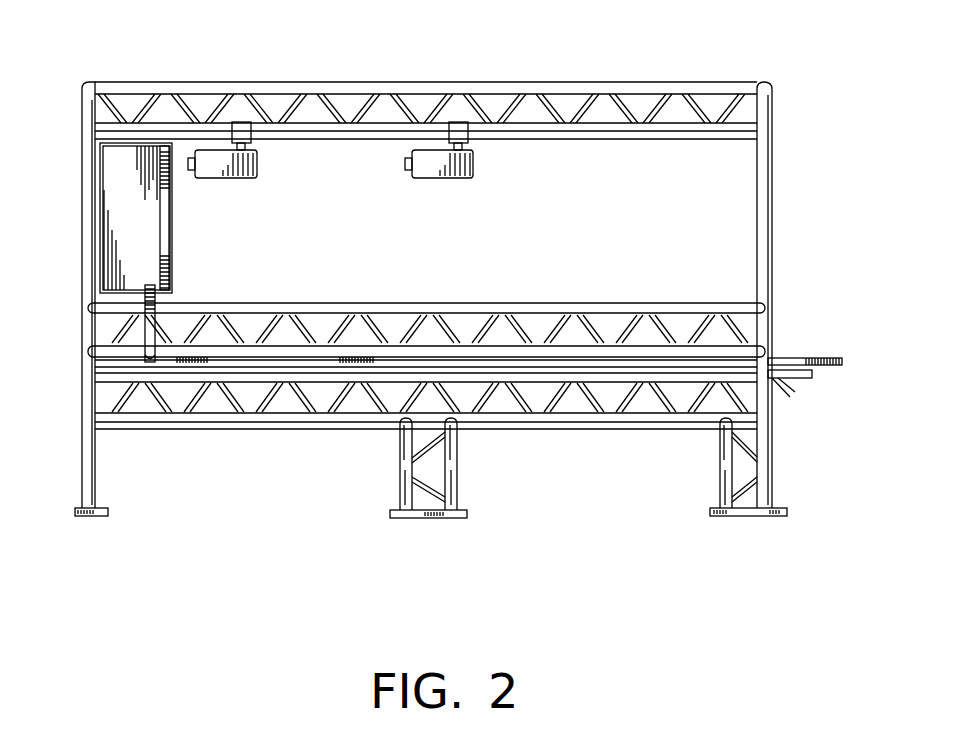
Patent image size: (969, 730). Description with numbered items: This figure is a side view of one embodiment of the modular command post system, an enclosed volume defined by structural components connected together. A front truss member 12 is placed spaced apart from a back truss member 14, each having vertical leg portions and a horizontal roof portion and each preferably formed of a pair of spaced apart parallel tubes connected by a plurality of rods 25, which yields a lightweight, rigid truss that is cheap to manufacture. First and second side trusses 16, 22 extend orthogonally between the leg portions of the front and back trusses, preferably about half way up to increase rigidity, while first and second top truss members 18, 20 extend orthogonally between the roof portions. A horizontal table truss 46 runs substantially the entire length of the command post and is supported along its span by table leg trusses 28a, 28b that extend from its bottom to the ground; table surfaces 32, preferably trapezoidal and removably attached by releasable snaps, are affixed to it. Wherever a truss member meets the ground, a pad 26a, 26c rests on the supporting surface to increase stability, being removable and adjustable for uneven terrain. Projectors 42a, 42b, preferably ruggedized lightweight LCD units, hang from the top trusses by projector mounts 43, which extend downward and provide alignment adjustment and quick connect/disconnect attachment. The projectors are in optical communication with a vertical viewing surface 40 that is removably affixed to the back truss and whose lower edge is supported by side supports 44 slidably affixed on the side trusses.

The front truss member 12 is at (770, 162).
The back truss member 14 is at (82, 228).
The first side truss 16 is at (426, 313).
The second side truss 22 is at (441, 303).
The first top truss member 18 is at (426, 82).
The second top truss member 20 is at (426, 82).
The rods 25 is at (703, 100).
The pad 26a is at (790, 507).
The pad 26c is at (78, 516).
The table leg truss 28a is at (722, 473).
The table leg truss 28b is at (455, 470).
The table surface 32 is at (821, 358).
The vertical viewing surface 40 is at (173, 267).
The projector 42a is at (220, 176).
The projector 42b is at (437, 176).
The projector mount 43 is at (241, 122).
The side support 44 is at (145, 323).
The horizontal table truss 46 is at (620, 429).